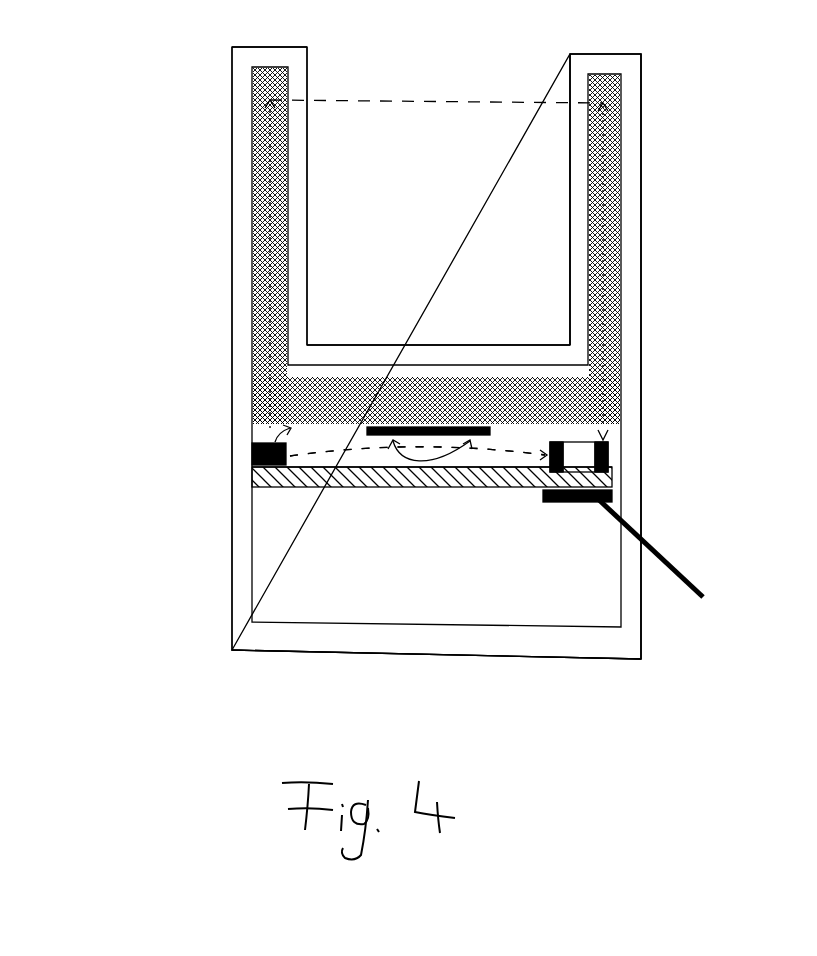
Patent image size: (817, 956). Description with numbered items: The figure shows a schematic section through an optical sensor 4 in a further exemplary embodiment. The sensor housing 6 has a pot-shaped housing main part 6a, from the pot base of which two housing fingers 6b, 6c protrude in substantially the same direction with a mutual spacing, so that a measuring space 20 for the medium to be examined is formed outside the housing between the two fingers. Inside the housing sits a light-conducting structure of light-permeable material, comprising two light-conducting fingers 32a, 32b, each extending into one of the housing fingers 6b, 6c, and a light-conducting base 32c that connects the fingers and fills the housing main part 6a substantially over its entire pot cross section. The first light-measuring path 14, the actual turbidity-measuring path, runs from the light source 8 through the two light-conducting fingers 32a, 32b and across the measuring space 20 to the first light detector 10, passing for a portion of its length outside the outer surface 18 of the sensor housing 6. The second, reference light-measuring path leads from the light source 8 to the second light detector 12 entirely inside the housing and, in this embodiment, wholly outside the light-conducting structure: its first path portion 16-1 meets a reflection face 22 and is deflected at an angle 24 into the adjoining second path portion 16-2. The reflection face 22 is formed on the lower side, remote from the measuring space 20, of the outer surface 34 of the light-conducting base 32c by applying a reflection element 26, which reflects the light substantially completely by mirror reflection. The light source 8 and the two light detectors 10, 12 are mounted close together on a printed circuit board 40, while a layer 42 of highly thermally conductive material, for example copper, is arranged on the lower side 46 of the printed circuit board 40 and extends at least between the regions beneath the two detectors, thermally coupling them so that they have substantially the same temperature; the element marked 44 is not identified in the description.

The optical sensor 4 is at (642, 253).
The sensor housing 6 is at (633, 300).
The housing main part 6a is at (235, 620).
The housing finger 6b is at (230, 78).
The housing finger 6c is at (652, 85).
The light source 8 is at (252, 462).
The light detector 10 is at (608, 460).
The light detector 12 is at (674, 567).
The first light-measuring path 14 is at (390, 100).
The first path portion 16-1 is at (345, 450).
The second path portion 16-2 is at (505, 455).
The outer surface 18 is at (322, 340).
The measuring space 20 is at (535, 143).
The reflection face 22 is at (340, 385).
The angle 24 is at (408, 464).
The reflection element 26 is at (390, 430).
The light-conducting finger 32a is at (250, 283).
The light-conducting finger 32b is at (610, 168).
The light-conducting base 32c is at (462, 422).
The outer surface 34 is at (255, 442).
The printed circuit board 40 is at (605, 487).
The layer 42 is at (568, 504).
The gap 44 is at (578, 458).
The lower side 46 is at (285, 490).